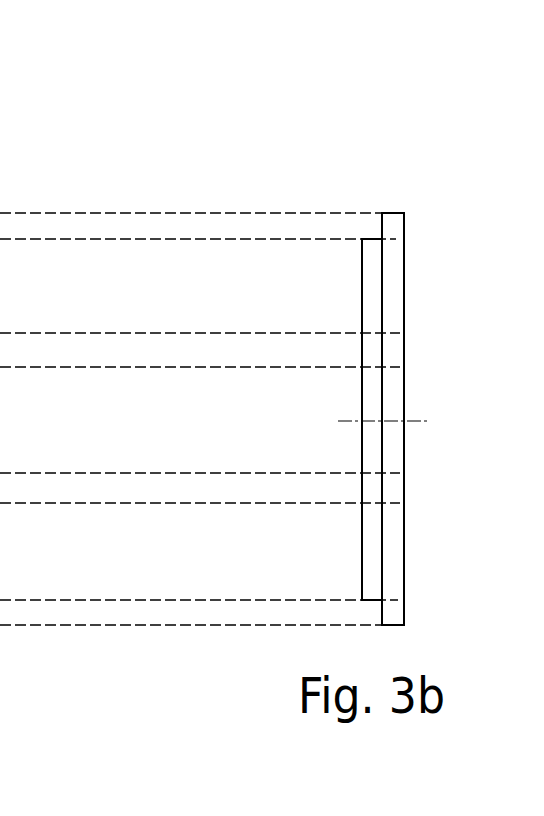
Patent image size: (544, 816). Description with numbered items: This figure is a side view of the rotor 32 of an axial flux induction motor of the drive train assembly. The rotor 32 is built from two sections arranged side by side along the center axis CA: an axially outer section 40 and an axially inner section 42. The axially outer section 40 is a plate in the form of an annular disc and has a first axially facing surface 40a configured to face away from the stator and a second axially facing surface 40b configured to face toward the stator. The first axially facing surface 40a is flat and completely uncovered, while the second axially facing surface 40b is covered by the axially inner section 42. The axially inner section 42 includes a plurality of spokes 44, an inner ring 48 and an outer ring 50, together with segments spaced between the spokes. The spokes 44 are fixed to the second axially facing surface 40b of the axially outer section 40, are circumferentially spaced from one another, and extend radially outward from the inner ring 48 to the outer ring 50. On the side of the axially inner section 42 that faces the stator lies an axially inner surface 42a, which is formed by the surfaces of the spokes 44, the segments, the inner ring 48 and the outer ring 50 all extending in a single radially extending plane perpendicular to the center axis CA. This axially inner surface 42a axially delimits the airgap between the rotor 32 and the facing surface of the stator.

The rotor 32 is at (435, 348).
The axially inner section 42 is at (398, 203).
The axially outer section 40 is at (372, 315).
The outer ring 50 is at (393, 225).
The spokes 44 is at (392, 273).
The inner ring 48 is at (389, 352).
The axially inner surface 42a is at (405, 395).
The center axis CA is at (415, 425).
The first axially facing surface 40a is at (378, 290).
The second axially facing surface 40b is at (362, 455).